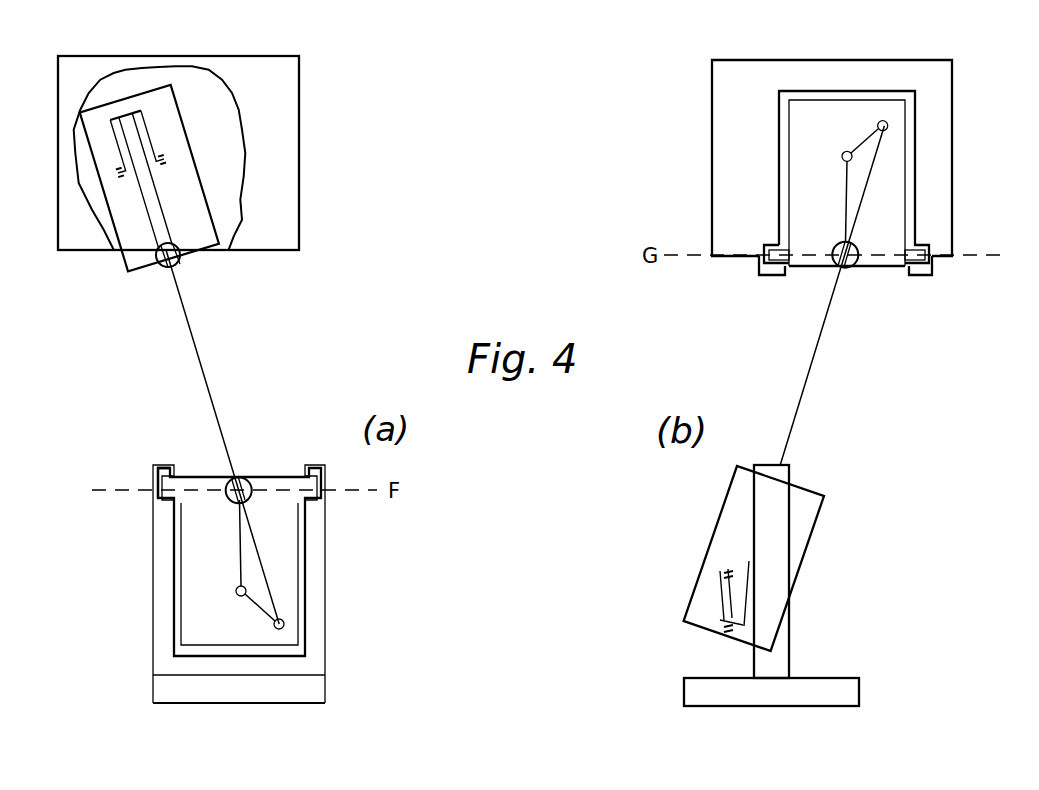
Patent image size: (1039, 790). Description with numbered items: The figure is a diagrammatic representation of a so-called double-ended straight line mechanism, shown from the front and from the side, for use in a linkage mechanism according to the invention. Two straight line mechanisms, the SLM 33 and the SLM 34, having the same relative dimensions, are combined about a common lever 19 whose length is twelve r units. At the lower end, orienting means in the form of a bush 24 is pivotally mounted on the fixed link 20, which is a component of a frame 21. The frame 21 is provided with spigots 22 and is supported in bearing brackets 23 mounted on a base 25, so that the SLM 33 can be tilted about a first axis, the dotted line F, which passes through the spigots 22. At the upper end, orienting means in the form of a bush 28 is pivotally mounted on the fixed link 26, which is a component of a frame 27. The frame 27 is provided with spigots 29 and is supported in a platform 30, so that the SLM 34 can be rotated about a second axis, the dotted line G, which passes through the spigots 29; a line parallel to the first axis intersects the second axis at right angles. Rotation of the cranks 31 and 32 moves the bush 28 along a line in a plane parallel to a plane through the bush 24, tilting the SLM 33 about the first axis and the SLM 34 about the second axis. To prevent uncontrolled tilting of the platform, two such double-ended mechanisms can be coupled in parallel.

The common lever 19 is at (200, 360).
The fixed link 20 is at (237, 553).
The frame 21 is at (180, 522).
The spigots 22 is at (166, 483).
The bearing brackets 23 is at (158, 587).
The bush 24 is at (242, 475).
The base 25 is at (158, 683).
The fixed link 26 is at (843, 188).
The frame 27 is at (898, 157).
The bush 28 is at (180, 253).
The spigots 29 is at (933, 268).
The platform 30 is at (285, 188).
The crank 31 is at (248, 600).
The crank 32 is at (863, 137).
The SLM 33 is at (250, 563).
The SLM 34 is at (125, 233).